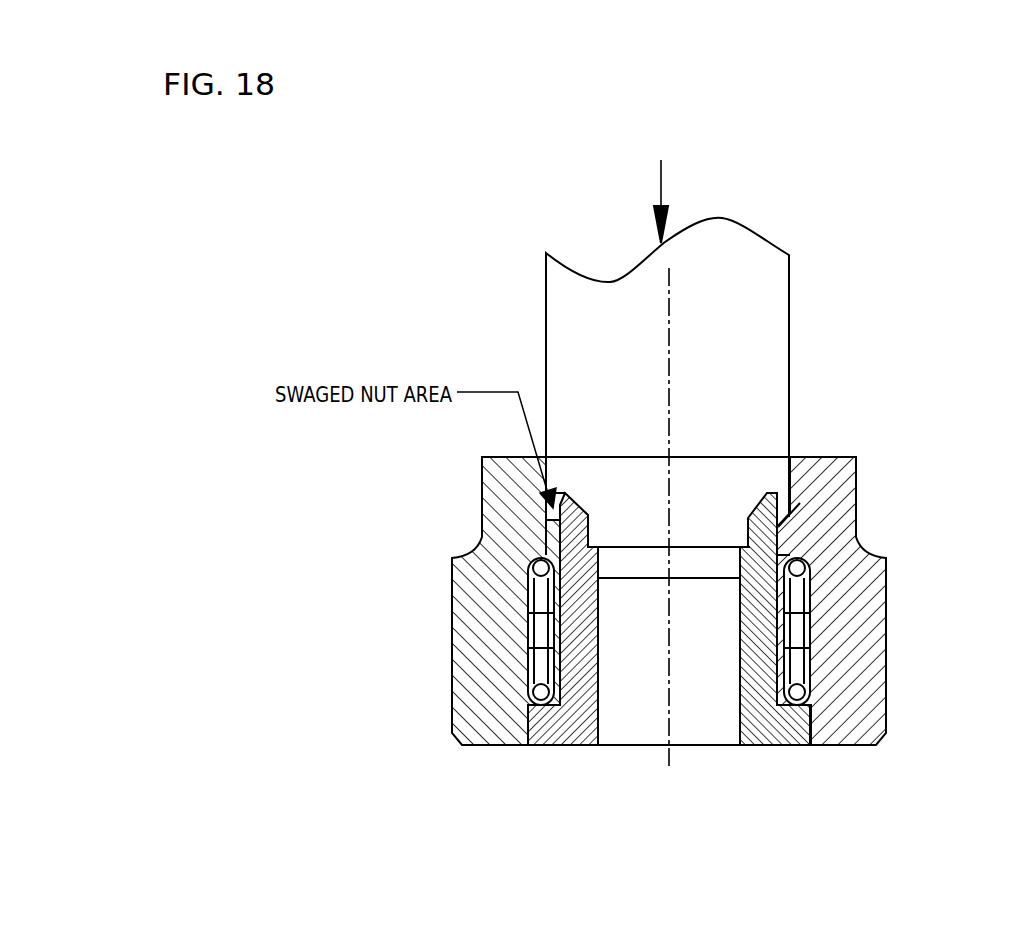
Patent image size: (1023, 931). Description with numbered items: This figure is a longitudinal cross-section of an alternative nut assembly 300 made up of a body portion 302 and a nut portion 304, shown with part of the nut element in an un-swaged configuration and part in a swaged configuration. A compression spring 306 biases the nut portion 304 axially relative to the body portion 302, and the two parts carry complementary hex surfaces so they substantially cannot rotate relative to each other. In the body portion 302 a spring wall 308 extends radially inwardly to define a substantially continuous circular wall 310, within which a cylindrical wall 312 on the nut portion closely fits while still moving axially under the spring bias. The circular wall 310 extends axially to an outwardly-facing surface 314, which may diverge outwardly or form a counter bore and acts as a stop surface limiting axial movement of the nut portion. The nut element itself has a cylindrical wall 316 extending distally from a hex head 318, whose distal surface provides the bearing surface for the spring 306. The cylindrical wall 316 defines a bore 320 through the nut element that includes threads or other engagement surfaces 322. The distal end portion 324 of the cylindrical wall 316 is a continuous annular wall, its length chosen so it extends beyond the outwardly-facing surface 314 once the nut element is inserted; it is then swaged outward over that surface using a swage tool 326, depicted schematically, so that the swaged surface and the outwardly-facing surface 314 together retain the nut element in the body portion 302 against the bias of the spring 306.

The nut assembly 300 is at (328, 463).
The body portion 302 is at (868, 504).
The nut portion 304 is at (550, 753).
The compression spring 306 is at (820, 697).
The spring wall 308 is at (800, 545).
The circular wall 310 is at (563, 580).
The cylindrical wall 312 is at (560, 613).
The outwardly-facing surface 314 is at (790, 515).
The cylindrical wall 316 is at (770, 628).
The hex head 318 is at (550, 725).
The bore 320 is at (709, 722).
The threads or other engagement surfaces 322 is at (604, 722).
The distal end portion 324 is at (560, 524).
The swage tool 326 is at (800, 363).